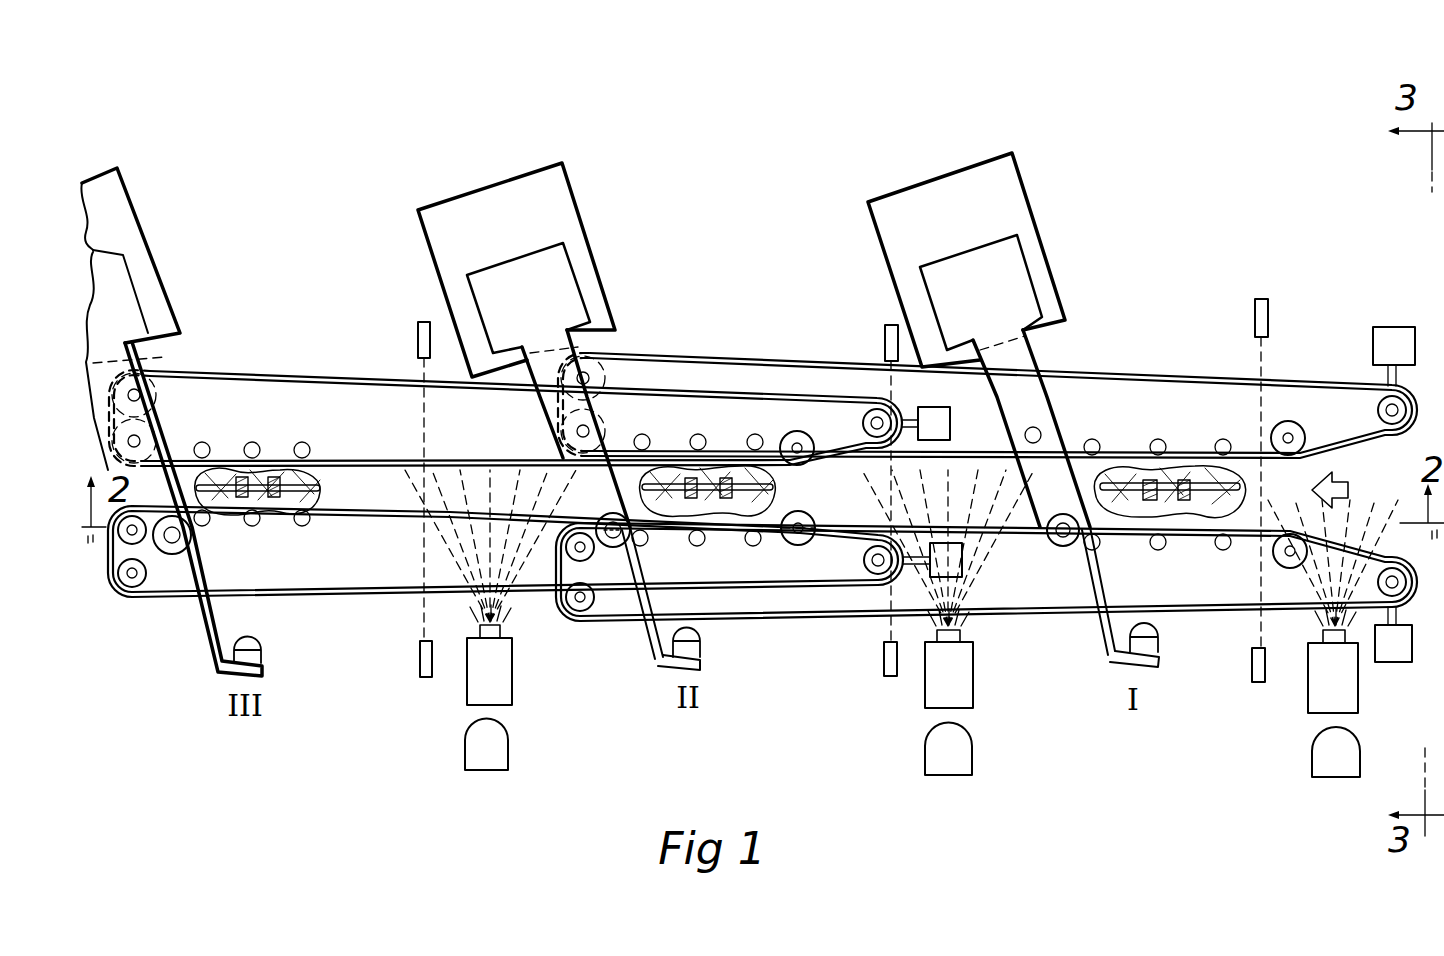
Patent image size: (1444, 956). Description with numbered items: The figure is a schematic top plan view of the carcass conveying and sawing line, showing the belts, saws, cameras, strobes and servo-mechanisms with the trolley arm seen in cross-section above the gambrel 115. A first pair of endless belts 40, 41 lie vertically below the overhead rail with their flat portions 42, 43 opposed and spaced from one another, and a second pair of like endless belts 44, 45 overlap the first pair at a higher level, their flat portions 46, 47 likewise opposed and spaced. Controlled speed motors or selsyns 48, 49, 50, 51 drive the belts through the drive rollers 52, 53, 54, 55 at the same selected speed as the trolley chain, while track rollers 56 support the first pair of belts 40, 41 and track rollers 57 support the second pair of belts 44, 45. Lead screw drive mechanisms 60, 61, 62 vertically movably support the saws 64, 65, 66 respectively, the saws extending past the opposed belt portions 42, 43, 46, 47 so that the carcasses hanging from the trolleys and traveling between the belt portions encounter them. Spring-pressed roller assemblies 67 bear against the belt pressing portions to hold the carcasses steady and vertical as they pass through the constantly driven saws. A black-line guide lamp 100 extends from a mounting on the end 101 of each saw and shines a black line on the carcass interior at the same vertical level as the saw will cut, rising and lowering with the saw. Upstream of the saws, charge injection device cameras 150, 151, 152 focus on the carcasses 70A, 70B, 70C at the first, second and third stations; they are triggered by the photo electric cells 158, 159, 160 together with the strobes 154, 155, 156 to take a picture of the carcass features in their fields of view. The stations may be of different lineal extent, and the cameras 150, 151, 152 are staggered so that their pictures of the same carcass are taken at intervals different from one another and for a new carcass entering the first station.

The endless belt 40 is at (1052, 622).
The endless belt 41 is at (1120, 366).
The flat portion 42 is at (1000, 532).
The flat portion 43 is at (968, 457).
The endless belt 44 is at (342, 604).
The endless belt 45 is at (319, 372).
The flat portion 46 is at (331, 512).
The flat portion 47 is at (346, 462).
The controlled speed motor 48 is at (1386, 657).
The controlled speed motor 49 is at (1385, 327).
The controlled speed motor 50 is at (962, 568).
The controlled speed motor 51 is at (934, 407).
The drive roller 52 is at (1398, 568).
The drive roller 53 is at (1380, 396).
The drive roller 54 is at (864, 560).
The drive roller 55 is at (862, 423).
The track roller 56 is at (607, 379).
The track roller 57 is at (147, 394).
The lead screw drive mechanism 60 is at (920, 185).
The lead screw drive mechanism 61 is at (492, 185).
The lead screw drive mechanism 62 is at (125, 186).
The saw 64 is at (1030, 349).
The saw 65 is at (588, 358).
The saw 66 is at (155, 357).
The spring-pressed roller assembly 67 is at (258, 443).
The carcass 70A is at (1248, 493).
The carcass 70B is at (778, 491).
The carcass 70C is at (321, 491).
The black-line guide lamp 100 is at (262, 657).
The end of the saw 101 is at (190, 547).
The gambrel 115 is at (198, 485).
The CID camera 150 is at (1358, 701).
The CID camera 151 is at (973, 684).
The CID camera 152 is at (512, 669).
The strobe 154 is at (1358, 743).
The strobe 155 is at (973, 756).
The strobe 156 is at (508, 751).
The photo electric cell 158 is at (1261, 299).
The photo electric cell 159 is at (889, 325).
The photo electric cell 160 is at (424, 322).